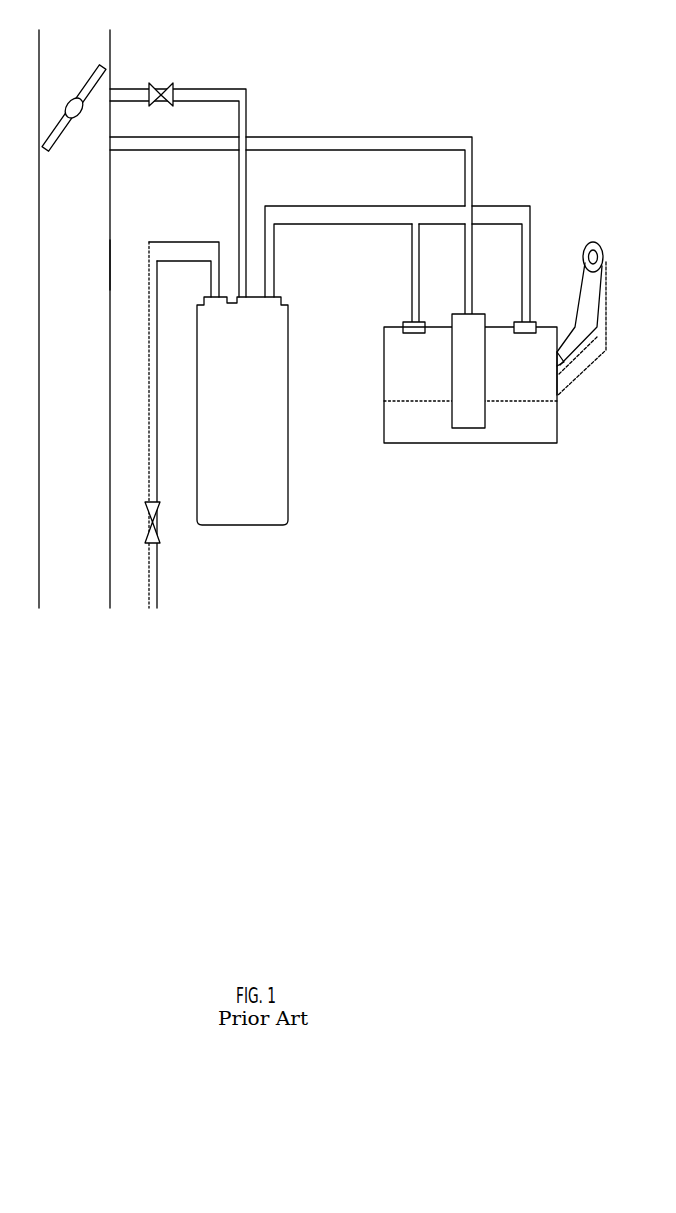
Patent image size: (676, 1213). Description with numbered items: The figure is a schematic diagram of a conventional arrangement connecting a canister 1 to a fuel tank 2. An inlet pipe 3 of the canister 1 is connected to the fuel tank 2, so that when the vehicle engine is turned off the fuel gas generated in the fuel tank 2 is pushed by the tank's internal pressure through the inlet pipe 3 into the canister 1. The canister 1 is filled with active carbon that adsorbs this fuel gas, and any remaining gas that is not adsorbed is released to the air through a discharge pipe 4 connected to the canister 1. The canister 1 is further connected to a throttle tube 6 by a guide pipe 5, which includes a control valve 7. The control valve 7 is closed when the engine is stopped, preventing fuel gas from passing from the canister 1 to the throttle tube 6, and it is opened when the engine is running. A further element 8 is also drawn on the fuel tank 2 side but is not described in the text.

The canister 1 is at (197, 395).
The fuel tank 2 is at (519, 444).
The inlet pipe 3 is at (498, 213).
The discharge pipe 4 is at (186, 241).
The guide pipe 5 is at (222, 88).
The throttle tube 6 is at (113, 268).
The control valve 7 is at (158, 82).
The float lever 8 is at (533, 320).